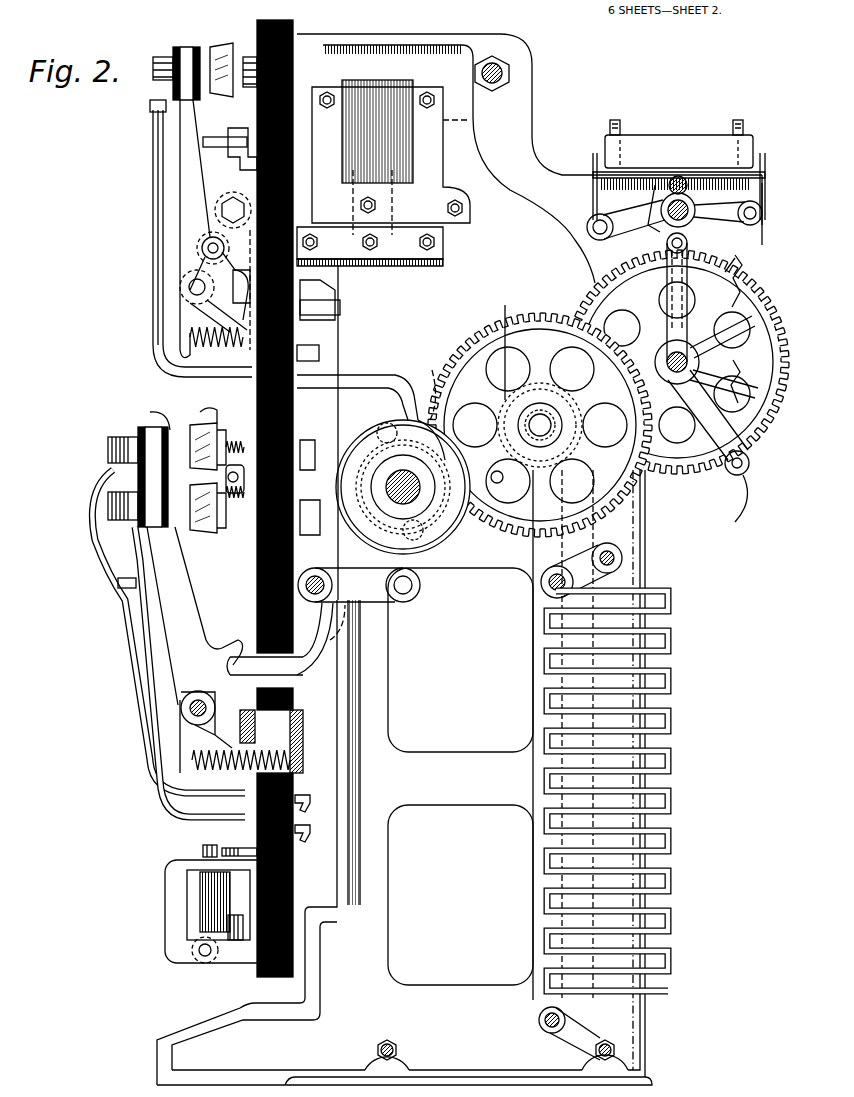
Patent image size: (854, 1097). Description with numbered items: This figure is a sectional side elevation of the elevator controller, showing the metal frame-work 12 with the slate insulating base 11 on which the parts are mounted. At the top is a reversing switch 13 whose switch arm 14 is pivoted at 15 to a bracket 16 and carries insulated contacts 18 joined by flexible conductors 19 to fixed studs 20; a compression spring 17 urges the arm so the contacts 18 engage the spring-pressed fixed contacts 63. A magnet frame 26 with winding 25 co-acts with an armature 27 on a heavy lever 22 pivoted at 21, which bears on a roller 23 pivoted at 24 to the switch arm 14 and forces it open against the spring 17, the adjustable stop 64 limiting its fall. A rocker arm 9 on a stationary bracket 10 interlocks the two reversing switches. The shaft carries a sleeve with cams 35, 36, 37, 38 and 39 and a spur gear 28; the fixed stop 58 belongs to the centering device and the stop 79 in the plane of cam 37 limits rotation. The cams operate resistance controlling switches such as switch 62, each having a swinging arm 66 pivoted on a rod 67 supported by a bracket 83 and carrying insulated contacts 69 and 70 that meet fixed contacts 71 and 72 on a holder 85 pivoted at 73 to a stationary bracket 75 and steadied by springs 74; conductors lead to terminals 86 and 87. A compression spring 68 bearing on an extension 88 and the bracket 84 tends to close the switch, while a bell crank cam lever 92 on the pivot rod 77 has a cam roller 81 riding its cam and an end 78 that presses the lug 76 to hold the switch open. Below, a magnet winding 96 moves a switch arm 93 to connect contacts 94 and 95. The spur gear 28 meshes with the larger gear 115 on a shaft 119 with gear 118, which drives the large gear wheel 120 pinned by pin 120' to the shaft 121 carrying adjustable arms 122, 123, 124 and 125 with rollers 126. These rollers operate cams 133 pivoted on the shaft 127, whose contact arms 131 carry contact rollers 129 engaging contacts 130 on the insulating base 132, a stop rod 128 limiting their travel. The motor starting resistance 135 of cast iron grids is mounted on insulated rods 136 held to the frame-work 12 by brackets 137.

The rocker arm 9 is at (211, 137).
The stationary bracket 10 is at (252, 130).
The insulating base 11 is at (262, 36).
The metal frame-work 12 is at (427, 760).
The reversing switch 13 is at (142, 216).
The switch arm 14 is at (188, 170).
The pivot 15 is at (193, 289).
The bracket 16 is at (215, 310).
The compression spring 17 is at (175, 360).
The insulated contacts 18 is at (215, 52).
The flexible conductors 19 is at (153, 131).
The fixed studs 20 is at (320, 376).
The pivot 21 is at (222, 208).
The lever 22 is at (205, 234).
The roller 23 is at (210, 249).
The pivot 24 is at (208, 256).
The magnet winding 25 is at (395, 84).
The magnet frame 26 is at (436, 142).
The magnet armature 27 is at (420, 238).
The spur gear 28 is at (432, 420).
The cam 35 is at (420, 578).
The cam 36 is at (455, 578).
The cam 37 is at (468, 566).
The cam 38 is at (495, 475).
The cam 39 is at (434, 372).
The fixed stop 58 is at (317, 473).
The resistance controlling switch 62 is at (112, 616).
The stationary fixed contacts 63 is at (213, 50).
The adjustable stop 64 is at (345, 312).
The swinging arm 66 is at (172, 628).
The rod 67 is at (190, 710).
The compression spring 68 is at (187, 790).
The insulated contact 69 is at (155, 420).
The insulated contact 70 is at (160, 495).
The fixed contact 71 is at (195, 437).
The fixed contact 72 is at (207, 524).
The pivot 73 is at (228, 478).
The springs 74 is at (236, 443).
The stationary bracket 75 is at (223, 483).
The lug 76 is at (231, 645).
The pivot rod 77 is at (350, 602).
The lever end 78 is at (300, 672).
The stop 79 is at (423, 397).
The cam roller 81 is at (417, 598).
The bracket 83 is at (245, 775).
The bracket 84 is at (300, 758).
The holder 85 is at (230, 430).
The terminal 86 is at (309, 802).
The terminal 87 is at (312, 832).
The extension 88 is at (185, 760).
The bell crank cam lever 92 is at (348, 612).
The switch arm 93 is at (178, 928).
The contact 94 is at (208, 840).
The contact 95 is at (239, 839).
The magnet winding 96 is at (208, 882).
The gear 115 is at (540, 318).
The gear 118 is at (497, 343).
The shaft 119 is at (540, 440).
The gear wheel 120 is at (677, 385).
The pin 120' is at (579, 412).
The shaft 121 is at (668, 352).
The arm 122 is at (740, 256).
The arm 123 is at (746, 312).
The arm 124 is at (737, 380).
The arm 125 is at (703, 450).
The roller 126 is at (633, 252).
The shaft 127 is at (683, 202).
The stop rod 128 is at (676, 178).
The contact roller 129 is at (748, 218).
The contact 130 is at (745, 175).
The contact arm 131 is at (728, 213).
The insulating base 132 is at (680, 136).
The cam 133 is at (655, 205).
The motor starting resistance 135 is at (670, 798).
The insulated rods 136 is at (547, 590).
The brackets 137 is at (510, 888).